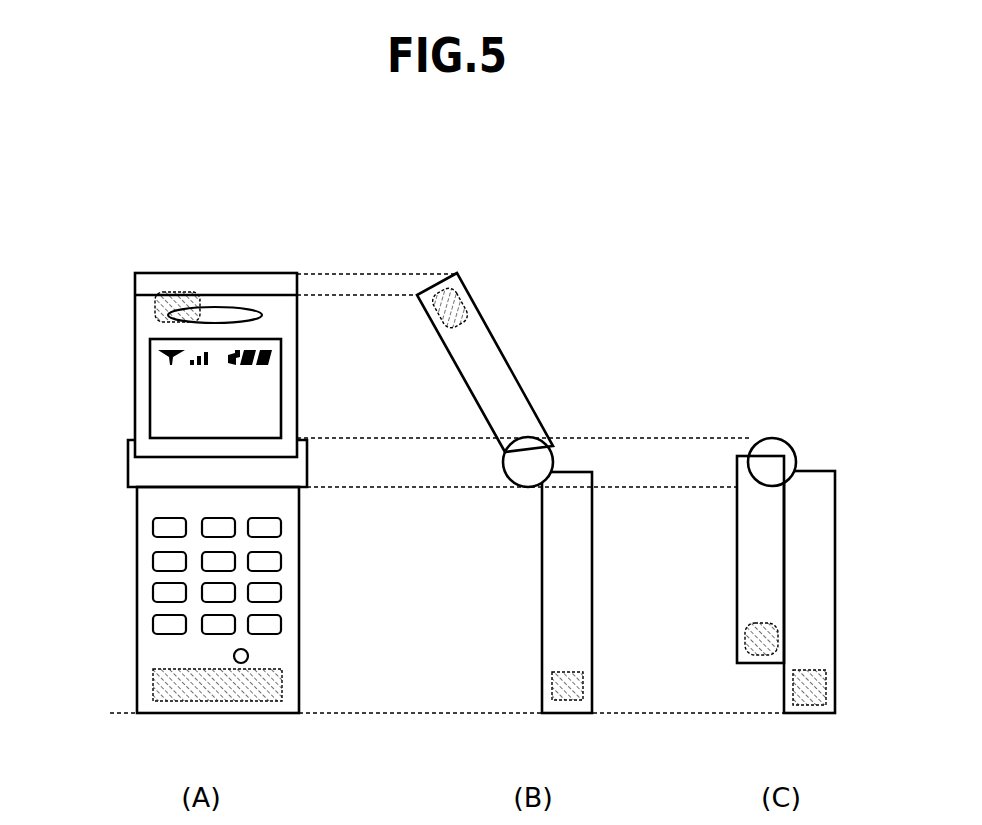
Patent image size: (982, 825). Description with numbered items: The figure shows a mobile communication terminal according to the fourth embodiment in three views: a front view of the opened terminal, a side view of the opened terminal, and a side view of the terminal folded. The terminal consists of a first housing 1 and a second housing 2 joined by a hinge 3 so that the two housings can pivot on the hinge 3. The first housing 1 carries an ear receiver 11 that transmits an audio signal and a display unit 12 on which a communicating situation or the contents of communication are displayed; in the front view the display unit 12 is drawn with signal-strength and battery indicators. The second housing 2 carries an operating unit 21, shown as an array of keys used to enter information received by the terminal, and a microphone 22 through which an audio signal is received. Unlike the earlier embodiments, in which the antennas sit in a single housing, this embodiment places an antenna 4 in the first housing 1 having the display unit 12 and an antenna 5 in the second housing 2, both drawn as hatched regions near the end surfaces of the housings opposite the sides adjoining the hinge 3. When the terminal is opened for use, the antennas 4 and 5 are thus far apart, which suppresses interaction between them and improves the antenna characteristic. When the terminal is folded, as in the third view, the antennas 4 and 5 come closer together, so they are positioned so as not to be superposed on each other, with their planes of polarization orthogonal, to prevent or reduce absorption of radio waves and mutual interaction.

The first housing 1 is at (135, 364).
The second housing 2 is at (137, 538).
The hinge 3 is at (140, 465).
The antenna 4 is at (158, 303).
The antenna 5 is at (157, 680).
The ear receiver 11 is at (221, 317).
The display unit 12 is at (268, 404).
The operating unit 21 is at (153, 593).
The microphone 22 is at (249, 657).